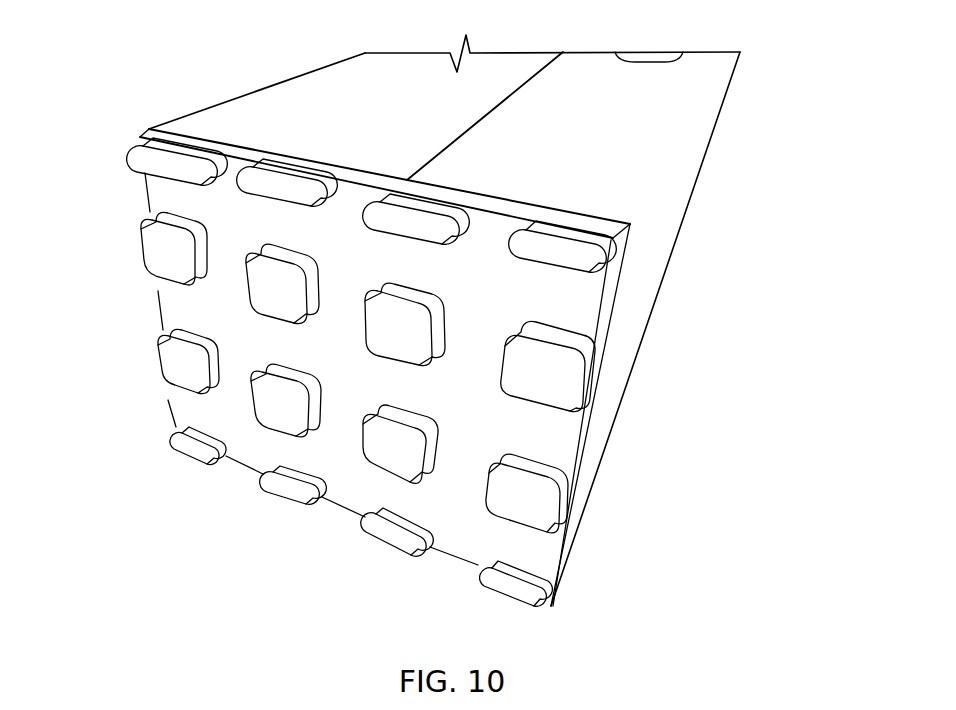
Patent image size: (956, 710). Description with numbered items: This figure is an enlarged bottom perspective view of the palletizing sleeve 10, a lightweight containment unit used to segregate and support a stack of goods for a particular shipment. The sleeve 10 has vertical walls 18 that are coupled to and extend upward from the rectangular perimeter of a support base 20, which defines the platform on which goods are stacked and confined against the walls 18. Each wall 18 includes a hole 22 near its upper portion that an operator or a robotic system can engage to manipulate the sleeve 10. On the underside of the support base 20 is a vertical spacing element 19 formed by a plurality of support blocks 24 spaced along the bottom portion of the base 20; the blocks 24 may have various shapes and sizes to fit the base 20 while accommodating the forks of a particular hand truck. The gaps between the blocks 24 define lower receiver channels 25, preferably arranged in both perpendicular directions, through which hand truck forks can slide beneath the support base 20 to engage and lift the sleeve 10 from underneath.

The palletizing sleeve 10 is at (459, 340).
The vertical walls 18 is at (277, 105).
The vertical spacing element 19 is at (650, 541).
The support base 20 is at (150, 135).
The hole 22 is at (645, 63).
The support blocks 24 is at (162, 247).
The receiver channels 25 is at (163, 402).